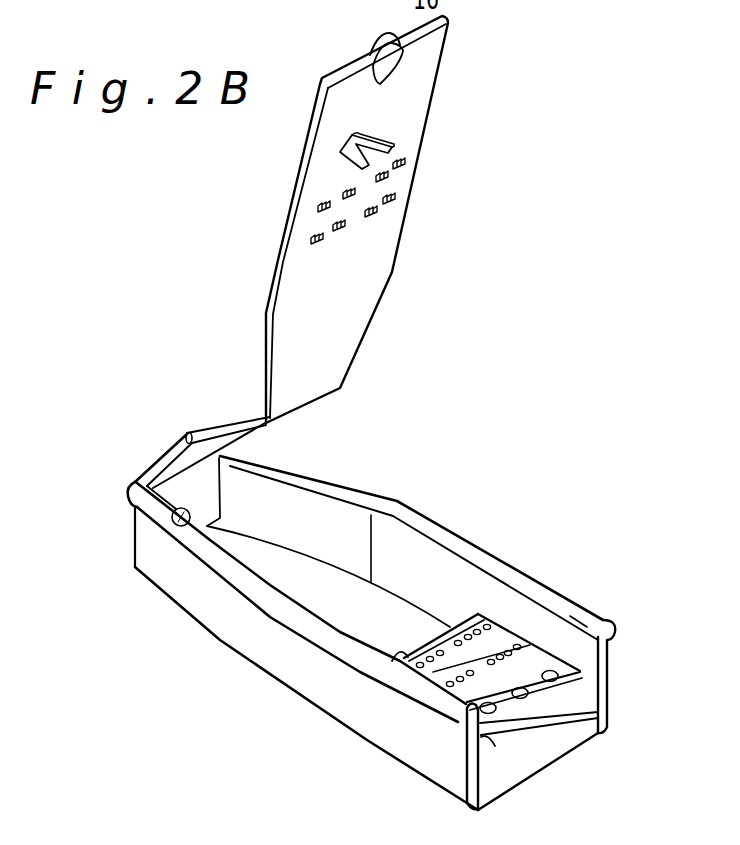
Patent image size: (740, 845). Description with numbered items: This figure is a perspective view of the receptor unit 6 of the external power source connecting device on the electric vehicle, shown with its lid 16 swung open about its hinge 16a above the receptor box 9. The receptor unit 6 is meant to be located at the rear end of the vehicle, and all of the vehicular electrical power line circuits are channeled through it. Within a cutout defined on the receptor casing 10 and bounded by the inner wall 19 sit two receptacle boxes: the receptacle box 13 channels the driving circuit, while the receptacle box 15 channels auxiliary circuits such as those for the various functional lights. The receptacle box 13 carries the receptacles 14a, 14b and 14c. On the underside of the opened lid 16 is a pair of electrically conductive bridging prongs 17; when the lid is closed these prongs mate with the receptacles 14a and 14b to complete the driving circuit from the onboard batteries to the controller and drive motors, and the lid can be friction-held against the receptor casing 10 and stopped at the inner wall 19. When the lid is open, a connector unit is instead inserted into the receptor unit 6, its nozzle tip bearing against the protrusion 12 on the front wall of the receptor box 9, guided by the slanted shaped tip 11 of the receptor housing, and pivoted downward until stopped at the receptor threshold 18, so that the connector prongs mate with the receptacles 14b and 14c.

The receptor unit 6 is at (242, 223).
The receptor box 9 is at (258, 658).
The receptor casing 10 is at (583, 662).
The slanted shaped tip 11 is at (253, 507).
The protrusion 12 is at (178, 510).
The receptacle box 13 is at (537, 659).
The receptacle 14a is at (494, 711).
The receptacle 14b is at (598, 739).
The receptacle 14c is at (607, 702).
The receptacle box 15 is at (490, 646).
The lid 16 is at (377, 240).
The hinge 16a is at (188, 432).
The electrically conductive prongs 17 is at (392, 149).
The receptor threshold 18 is at (497, 745).
The inner wall 19 is at (397, 658).